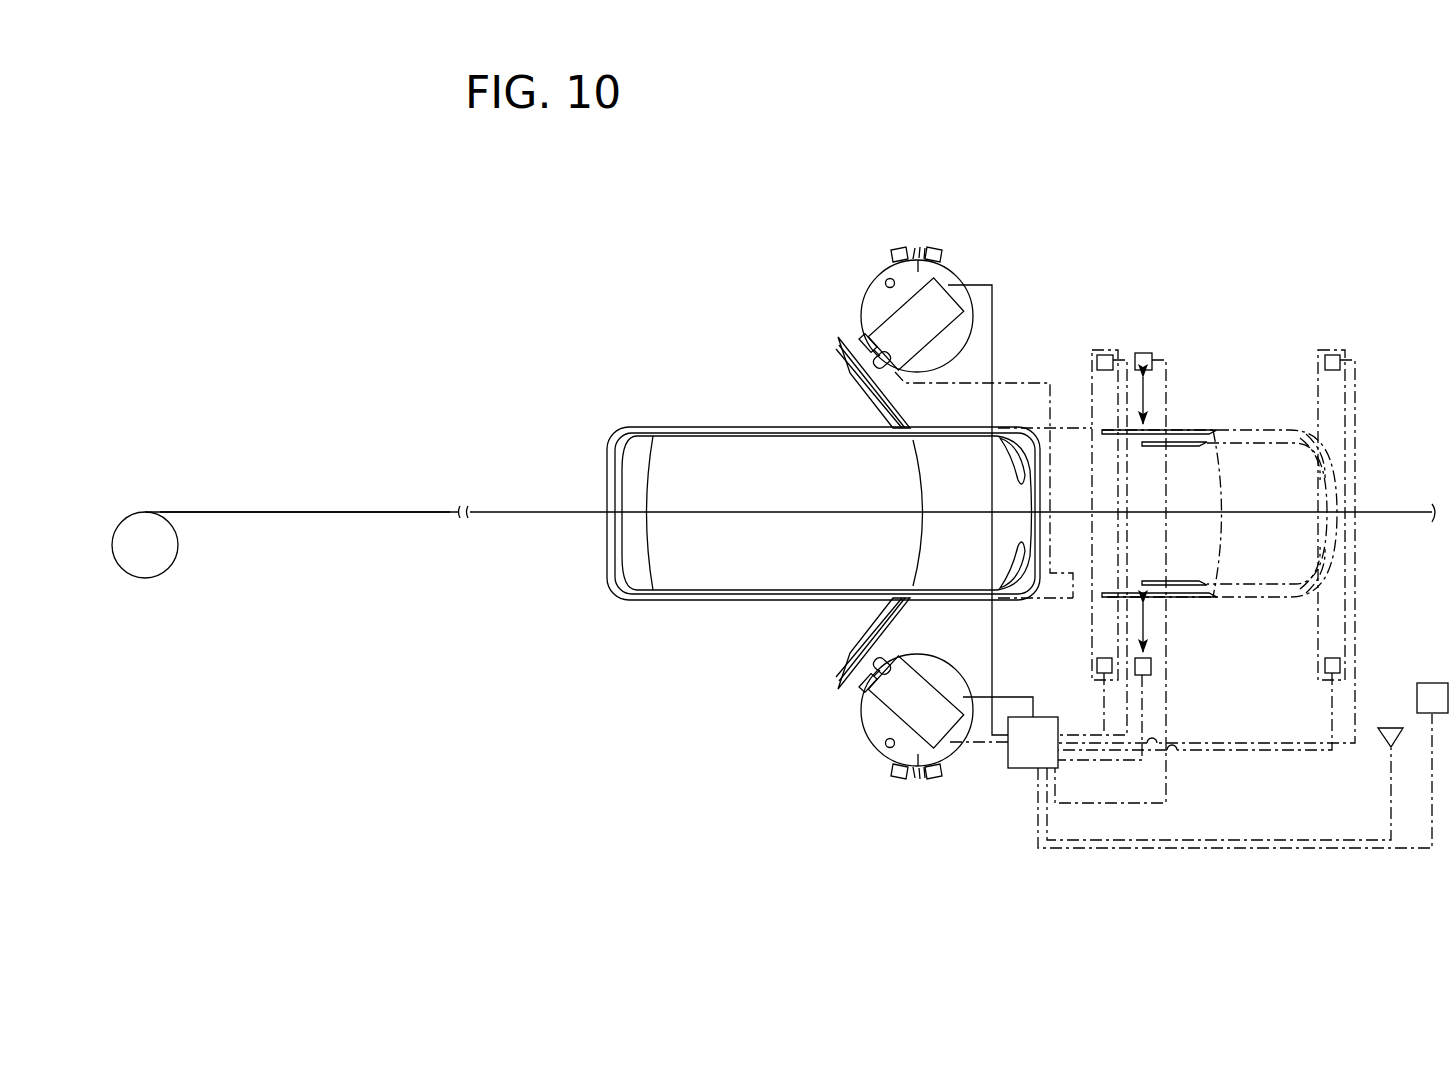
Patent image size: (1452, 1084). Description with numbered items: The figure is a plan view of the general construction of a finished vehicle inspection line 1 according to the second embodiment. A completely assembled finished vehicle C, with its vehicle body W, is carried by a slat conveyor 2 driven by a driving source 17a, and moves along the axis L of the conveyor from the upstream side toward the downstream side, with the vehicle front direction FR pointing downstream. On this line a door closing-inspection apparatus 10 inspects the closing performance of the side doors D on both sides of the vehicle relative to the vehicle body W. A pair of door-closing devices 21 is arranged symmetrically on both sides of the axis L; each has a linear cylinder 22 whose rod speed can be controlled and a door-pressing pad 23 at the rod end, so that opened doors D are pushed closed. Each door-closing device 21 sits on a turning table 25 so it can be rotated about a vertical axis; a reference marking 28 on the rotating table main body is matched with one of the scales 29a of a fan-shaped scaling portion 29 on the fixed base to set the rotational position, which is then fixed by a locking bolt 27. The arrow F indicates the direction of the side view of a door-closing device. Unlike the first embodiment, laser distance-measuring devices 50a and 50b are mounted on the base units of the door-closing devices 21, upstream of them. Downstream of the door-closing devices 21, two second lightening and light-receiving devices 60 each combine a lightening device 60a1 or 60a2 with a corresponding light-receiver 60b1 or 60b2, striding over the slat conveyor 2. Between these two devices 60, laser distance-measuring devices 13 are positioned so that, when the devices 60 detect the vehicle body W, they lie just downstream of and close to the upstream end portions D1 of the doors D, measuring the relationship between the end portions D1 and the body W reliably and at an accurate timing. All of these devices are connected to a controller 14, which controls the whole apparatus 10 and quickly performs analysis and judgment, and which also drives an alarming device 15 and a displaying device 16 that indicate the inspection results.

The finished vehicle inspection line 1 is at (400, 400).
The slat conveyor 2 is at (355, 508).
The door closing-inspection apparatus 10 is at (712, 308).
The laser distance-measuring device 13 is at (1152, 355).
The controller 14 is at (1021, 762).
The alarming device 15 is at (1391, 727).
The displaying device 16 is at (1432, 682).
The driving source 17a is at (162, 552).
The door-closing device 21 is at (841, 489).
The linear cylinder 22 is at (888, 302).
The door-pressing pad 23 is at (860, 360).
The turning table 25 is at (960, 270).
The locking bolt 27 is at (887, 279).
The reference marking 28 is at (920, 271).
The scaling portion 29 is at (903, 248).
The scale 29a is at (925, 262).
The laser distance-measuring device 50a is at (860, 338).
The laser distance-measuring device 50b is at (862, 667).
The second lightening and light-receiving device 60 is at (1086, 406).
The lightening device 60a1 is at (1104, 354).
The lightening device 60a2 is at (1332, 354).
The light-receiver 60b1 is at (1097, 666).
The light-receiver 60b2 is at (1325, 669).
The finished vehicle C is at (693, 420).
The vehicle body W is at (742, 445).
The door D is at (896, 403).
The end portion of door D1 is at (1095, 586).
The axis of slat conveyor L is at (409, 508).
The arrow F is at (803, 837).
The vehicle front direction FR is at (1430, 482).